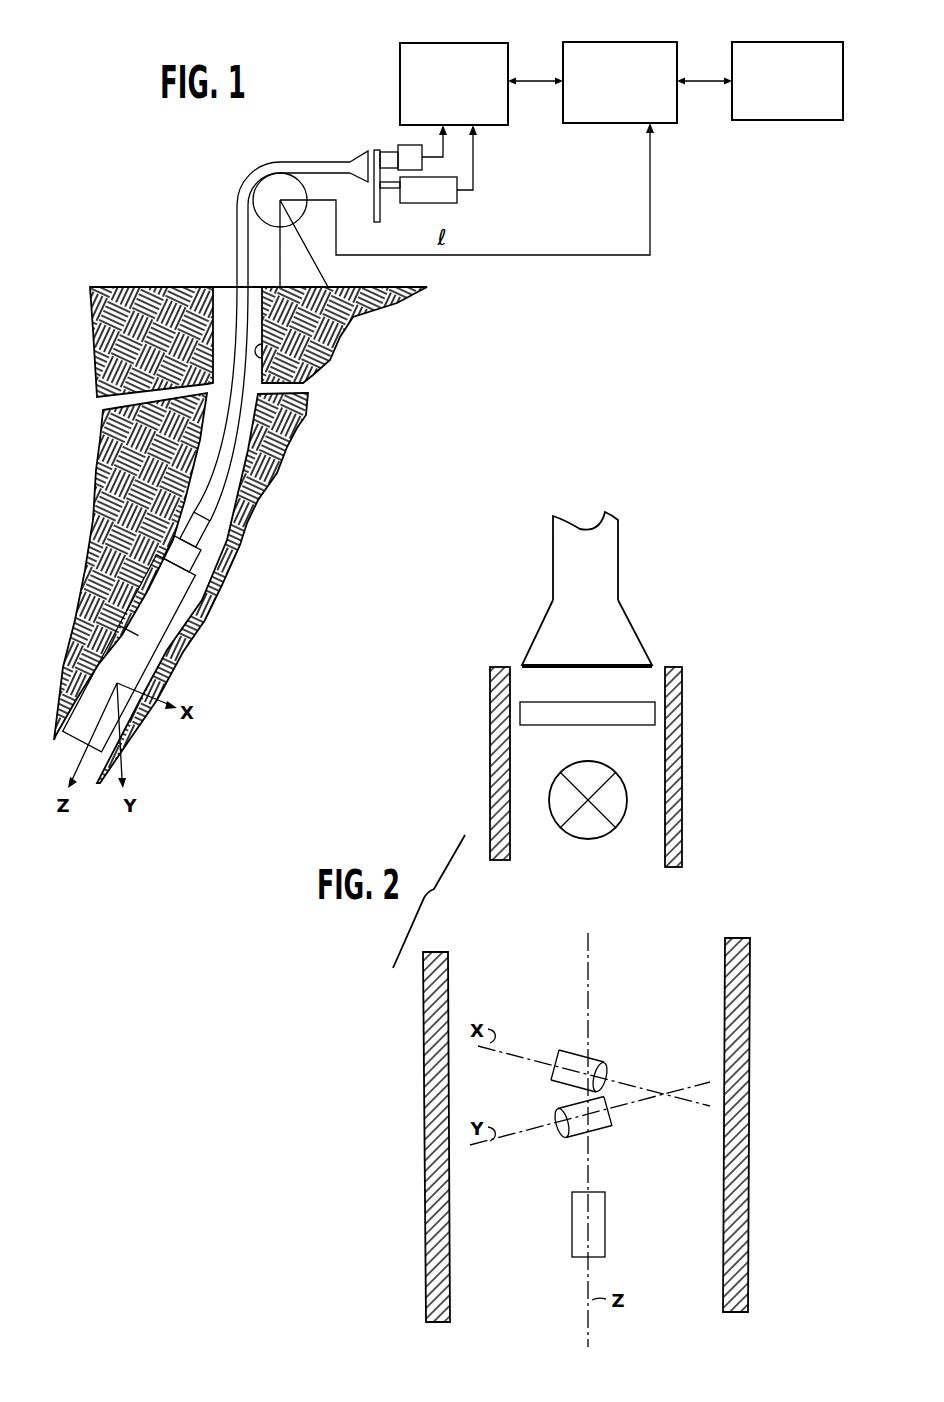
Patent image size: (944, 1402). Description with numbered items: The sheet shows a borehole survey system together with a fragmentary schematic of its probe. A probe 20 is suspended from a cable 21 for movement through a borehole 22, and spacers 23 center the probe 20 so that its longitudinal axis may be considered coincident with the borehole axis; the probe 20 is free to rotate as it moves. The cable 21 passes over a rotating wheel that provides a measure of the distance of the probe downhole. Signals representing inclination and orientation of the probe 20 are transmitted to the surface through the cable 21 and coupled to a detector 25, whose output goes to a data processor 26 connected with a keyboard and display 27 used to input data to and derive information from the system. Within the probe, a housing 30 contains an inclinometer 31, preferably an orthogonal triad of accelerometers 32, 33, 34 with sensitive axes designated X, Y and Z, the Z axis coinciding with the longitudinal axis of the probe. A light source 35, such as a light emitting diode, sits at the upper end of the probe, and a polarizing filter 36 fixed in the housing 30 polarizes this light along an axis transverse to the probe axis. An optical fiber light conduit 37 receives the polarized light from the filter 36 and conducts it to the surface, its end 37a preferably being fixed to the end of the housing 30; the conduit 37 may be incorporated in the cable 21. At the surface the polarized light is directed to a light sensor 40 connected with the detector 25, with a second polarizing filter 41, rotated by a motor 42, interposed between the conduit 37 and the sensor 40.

In FIG. 1, the probe 20 is at (187, 647).
In FIG. 2, the probe 20 is at (778, 988).
In FIG. 1, the cable 21 is at (231, 445).
In FIG. 1, the borehole 22 is at (266, 352).
In FIG. 1, the spacers 23 is at (100, 531).
In FIG. 1, the detector 25 is at (413, 57).
In FIG. 1, the data processor 26 is at (583, 108).
In FIG. 1, the keyboard and display 27 is at (767, 115).
In FIG. 1, the light sensor 40 is at (408, 157).
In FIG. 1, the second polarizing filter 41 is at (381, 212).
In FIG. 1, the motor 42 is at (443, 200).
In FIG. 2, the housing 30 is at (493, 722).
In FIG. 2, the inclinometer 31 is at (633, 997).
In FIG. 2, the accelerometer 32 is at (573, 1052).
In FIG. 2, the accelerometer 33 is at (612, 1110).
In FIG. 2, the accelerometer 34 is at (578, 1223).
In FIG. 2, the light source 35 is at (595, 830).
In FIG. 2, the polarizing filter 36 is at (637, 712).
In FIG. 2, the optical fiber light conduit 37 is at (610, 560).
In FIG. 2, the end of the optical fiber light conduit 37a is at (637, 650).